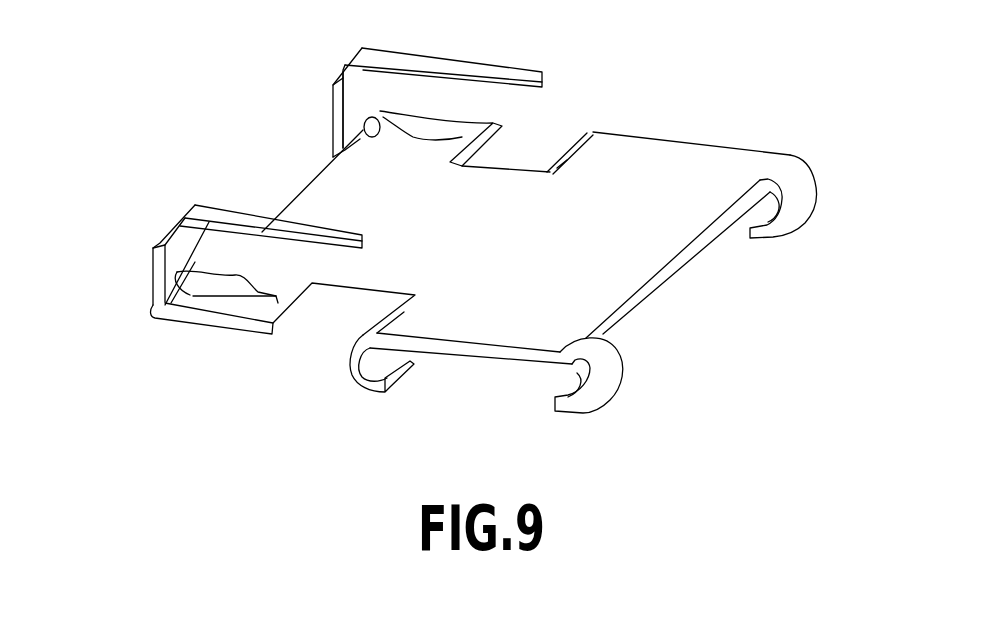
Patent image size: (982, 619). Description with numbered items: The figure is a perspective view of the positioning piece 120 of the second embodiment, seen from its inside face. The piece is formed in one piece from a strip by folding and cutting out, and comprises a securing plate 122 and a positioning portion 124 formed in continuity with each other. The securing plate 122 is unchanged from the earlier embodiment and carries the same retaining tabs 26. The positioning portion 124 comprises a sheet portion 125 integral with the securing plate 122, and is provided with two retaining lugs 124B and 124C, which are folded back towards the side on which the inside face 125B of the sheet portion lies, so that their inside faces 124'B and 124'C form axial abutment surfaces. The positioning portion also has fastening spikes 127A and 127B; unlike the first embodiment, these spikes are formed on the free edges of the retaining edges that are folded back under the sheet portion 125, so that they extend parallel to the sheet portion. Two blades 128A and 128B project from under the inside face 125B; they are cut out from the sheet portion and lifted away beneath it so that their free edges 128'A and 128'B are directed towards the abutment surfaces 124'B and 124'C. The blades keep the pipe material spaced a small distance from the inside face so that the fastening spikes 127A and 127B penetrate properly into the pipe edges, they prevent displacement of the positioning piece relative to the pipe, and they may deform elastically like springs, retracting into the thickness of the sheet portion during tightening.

The positioning piece 120 is at (680, 86).
The securing plate 122 is at (636, 250).
The retaining tabs 26 is at (800, 205).
The positioning portion 124 is at (313, 182).
The retaining lug 124B is at (332, 102).
The inside face of retaining lug 124'B is at (399, 74).
The retaining lug 124C is at (152, 270).
The inside face of retaining lug 124'C is at (274, 323).
The sheet portion 125 is at (392, 191).
The inside face of sheet portion 125B is at (304, 194).
The fastening spike 127A is at (450, 63).
The fastening spike 127B is at (300, 213).
The blade 128A is at (408, 126).
The free edge of blade 128'A is at (434, 154).
The blade 128B is at (252, 294).
The free edge of blade 128'B is at (143, 252).